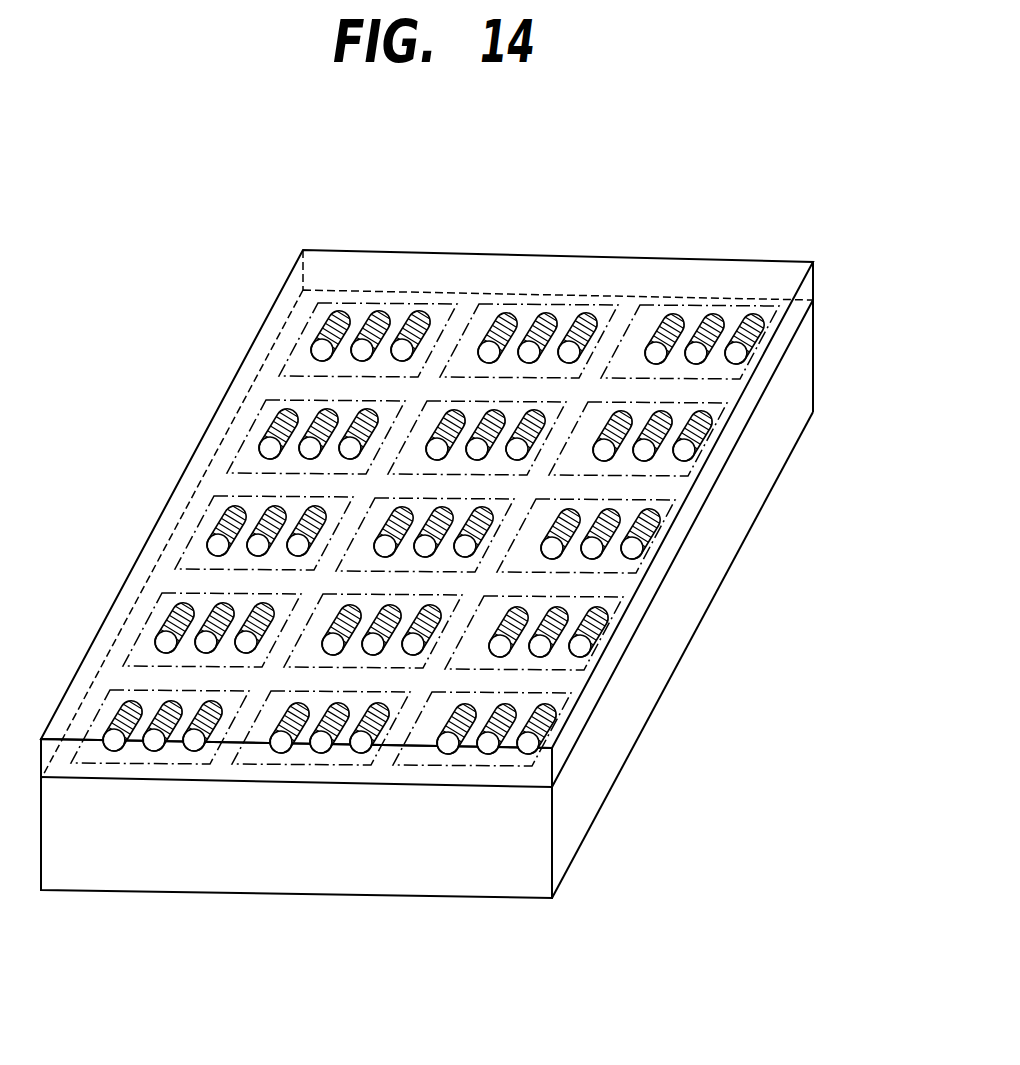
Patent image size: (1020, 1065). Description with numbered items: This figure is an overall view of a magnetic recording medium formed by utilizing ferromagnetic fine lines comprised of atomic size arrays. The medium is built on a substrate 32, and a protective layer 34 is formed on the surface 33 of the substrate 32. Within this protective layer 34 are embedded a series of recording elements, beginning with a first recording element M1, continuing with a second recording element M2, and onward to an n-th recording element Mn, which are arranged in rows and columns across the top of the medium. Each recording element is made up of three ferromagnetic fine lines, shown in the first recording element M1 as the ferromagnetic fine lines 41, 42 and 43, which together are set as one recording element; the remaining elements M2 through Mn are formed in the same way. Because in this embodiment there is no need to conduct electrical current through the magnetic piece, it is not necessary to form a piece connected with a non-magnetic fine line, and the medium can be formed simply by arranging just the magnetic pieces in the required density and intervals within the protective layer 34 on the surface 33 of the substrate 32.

The substrate 32 is at (720, 573).
The surface of the substrate 33 is at (722, 474).
The protective layer 34 is at (770, 370).
The ferromagnetic fine line 41 is at (327, 318).
The ferromagnetic fine line 42 is at (378, 315).
The ferromagnetic fine line 43 is at (413, 315).
The recording element M1 is at (309, 288).
The recording element M2 is at (533, 308).
The recording element Mn is at (547, 720).